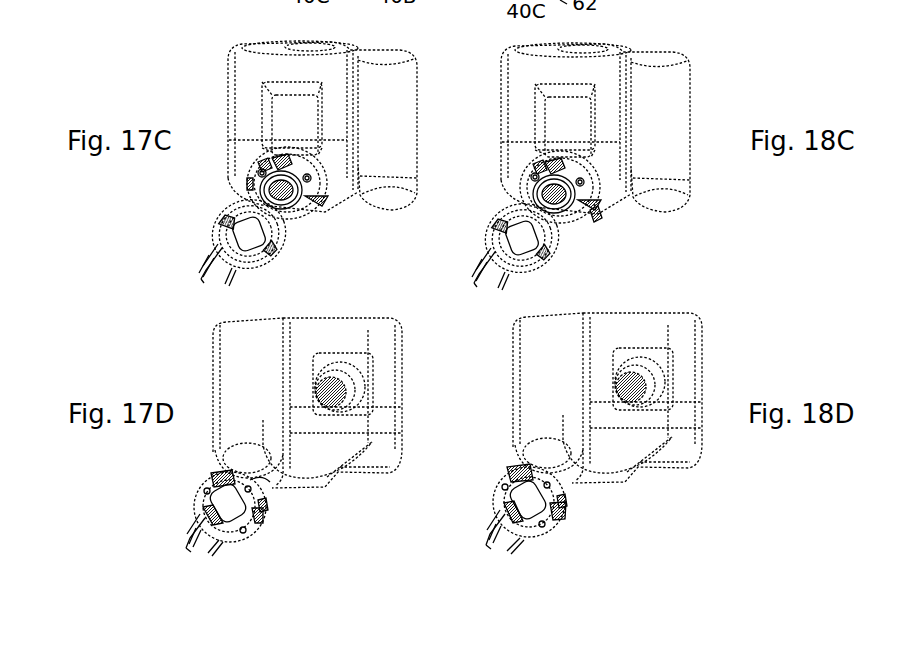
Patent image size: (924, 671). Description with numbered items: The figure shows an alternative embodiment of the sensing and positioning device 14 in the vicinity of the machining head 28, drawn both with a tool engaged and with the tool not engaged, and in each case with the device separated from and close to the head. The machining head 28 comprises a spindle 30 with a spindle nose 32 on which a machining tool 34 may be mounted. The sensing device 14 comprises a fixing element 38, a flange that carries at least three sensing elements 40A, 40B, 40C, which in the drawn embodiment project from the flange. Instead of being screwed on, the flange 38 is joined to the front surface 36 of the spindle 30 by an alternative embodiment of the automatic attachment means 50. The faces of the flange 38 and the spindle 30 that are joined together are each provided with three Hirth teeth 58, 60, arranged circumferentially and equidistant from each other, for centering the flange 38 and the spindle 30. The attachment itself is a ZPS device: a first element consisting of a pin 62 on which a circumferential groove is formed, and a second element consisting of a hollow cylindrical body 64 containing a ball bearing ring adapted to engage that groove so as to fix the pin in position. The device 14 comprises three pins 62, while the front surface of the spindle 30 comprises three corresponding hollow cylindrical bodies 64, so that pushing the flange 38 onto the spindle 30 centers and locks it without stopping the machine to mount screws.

In FIG. 17C, the sensing device 14 is at (290, 263).
In FIG. 18C, the sensing device 14 is at (565, 267).
In FIG. 17D, the sensing device 14 is at (270, 537).
In FIG. 18D, the sensing device 14 is at (563, 537).
In FIG. 17C, the machining head 28 is at (425, 101).
In FIG. 18C, the machining head 28 is at (710, 110).
In FIG. 17D, the machining head 28 is at (413, 377).
In FIG. 18D, the machining head 28 is at (716, 378).
In FIG. 17C, the spindle 30 is at (336, 182).
In FIG. 18C, the spindle 30 is at (598, 195).
In FIG. 17C, the spindle nose 32 is at (278, 194).
In FIG. 18C, the spindle nose 32 is at (562, 198).
In FIG. 17C, the machining tool 34 is at (275, 208).
In FIG. 18C, the machining tool 34 is at (554, 194).
In FIG. 17D, the machining tool 34 is at (255, 482).
In FIG. 17C, the front surface 36 is at (267, 163).
In FIG. 18C, the front surface 36 is at (540, 166).
In FIG. 17C, the fixing element 38 is at (217, 217).
In FIG. 18C, the fixing element 38 is at (492, 210).
In FIG. 17D, the fixing element 38 is at (200, 502).
In FIG. 18D, the fixing element 38 is at (507, 480).
In FIG. 17C, the sensing element 40A is at (222, 246).
In FIG. 18C, the sensing element 40A is at (493, 238).
In FIG. 17D, the sensing element 40A is at (187, 525).
In FIG. 18D, the sensing element 40A is at (496, 512).
In FIG. 17C, the sensing element 40B is at (203, 277).
In FIG. 18C, the sensing element 40B is at (480, 277).
In FIG. 17D, the sensing element 40B is at (193, 547).
In FIG. 18D, the sensing element 40B is at (487, 547).
In FIG. 17C, the sensing element 40C is at (227, 282).
In FIG. 18C, the sensing element 40C is at (500, 286).
In FIG. 17D, the sensing element 40C is at (207, 552).
In FIG. 18D, the sensing element 40C is at (513, 543).
In FIG. 17C, the automatic attachment means 50 is at (253, 183).
In FIG. 18C, the automatic attachment means 50 is at (593, 218).
In FIG. 17D, the automatic attachment means 50 is at (271, 517).
In FIG. 18D, the automatic attachment means 50 is at (575, 508).
In FIG. 17C, the Hirth teeth 58 is at (275, 160).
In FIG. 18C, the Hirth teeth 58 is at (668, 22).
In FIG. 17D, the Hirth teeth 60 is at (218, 477).
In FIG. 18D, the Hirth teeth 60 is at (518, 472).
In FIG. 17D, the pin 62 is at (208, 492).
In FIG. 18D, the pin 62 is at (573, 520).
In FIG. 17C, the hollow cylindrical body 64 is at (268, 172).
In FIG. 18C, the hollow cylindrical body 64 is at (583, 172).